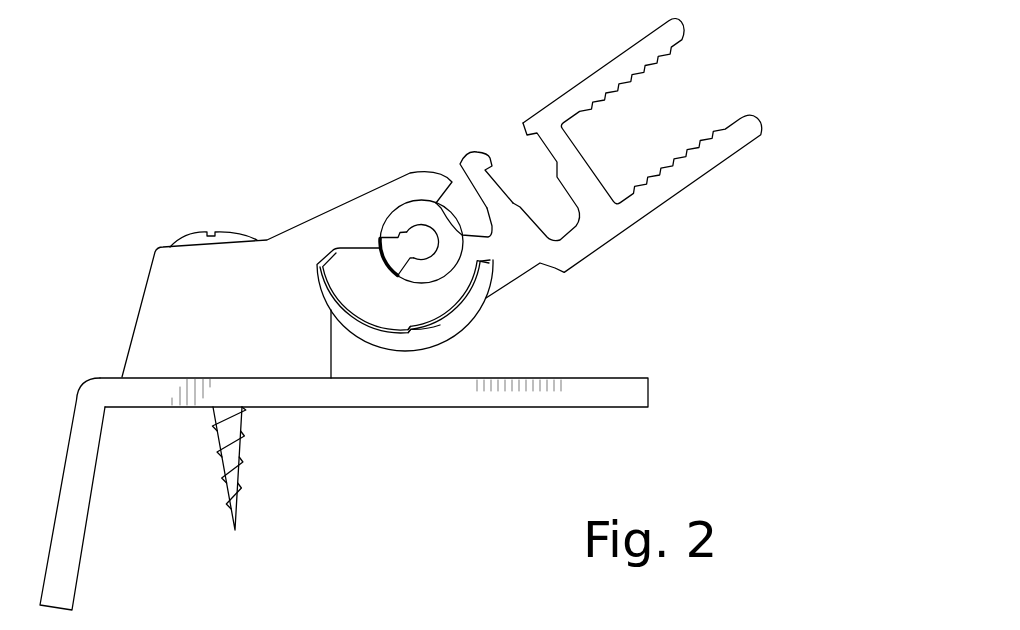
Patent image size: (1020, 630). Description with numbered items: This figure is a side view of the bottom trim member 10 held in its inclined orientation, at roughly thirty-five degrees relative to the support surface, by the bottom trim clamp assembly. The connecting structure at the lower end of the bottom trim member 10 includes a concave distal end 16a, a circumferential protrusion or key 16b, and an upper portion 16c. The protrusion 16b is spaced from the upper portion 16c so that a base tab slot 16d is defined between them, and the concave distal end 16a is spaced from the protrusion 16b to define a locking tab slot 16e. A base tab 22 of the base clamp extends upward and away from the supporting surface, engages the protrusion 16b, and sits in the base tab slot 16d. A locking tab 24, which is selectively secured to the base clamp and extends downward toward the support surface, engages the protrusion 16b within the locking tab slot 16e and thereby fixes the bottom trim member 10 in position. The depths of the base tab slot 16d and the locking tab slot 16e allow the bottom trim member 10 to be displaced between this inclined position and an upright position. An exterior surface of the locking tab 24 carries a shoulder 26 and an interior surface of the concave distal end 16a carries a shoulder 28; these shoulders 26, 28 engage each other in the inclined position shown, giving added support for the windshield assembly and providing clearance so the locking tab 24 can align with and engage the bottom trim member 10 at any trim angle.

The bottom trim member 10 is at (728, 258).
The concave distal end 16a is at (473, 323).
The circumferential protrusion or key 16b is at (408, 215).
The upper portion 16c is at (472, 176).
The base tab slot 16d is at (470, 213).
The locking tab slot 16e is at (480, 292).
The base tab 22 is at (352, 222).
The locking tab 24 is at (390, 288).
The shoulder 26 is at (413, 324).
The shoulder 28 is at (432, 323).